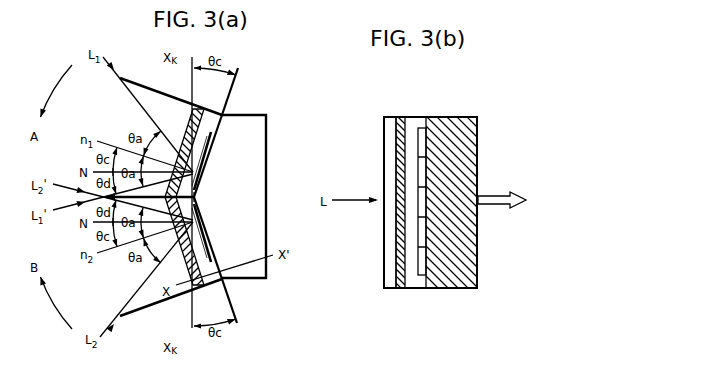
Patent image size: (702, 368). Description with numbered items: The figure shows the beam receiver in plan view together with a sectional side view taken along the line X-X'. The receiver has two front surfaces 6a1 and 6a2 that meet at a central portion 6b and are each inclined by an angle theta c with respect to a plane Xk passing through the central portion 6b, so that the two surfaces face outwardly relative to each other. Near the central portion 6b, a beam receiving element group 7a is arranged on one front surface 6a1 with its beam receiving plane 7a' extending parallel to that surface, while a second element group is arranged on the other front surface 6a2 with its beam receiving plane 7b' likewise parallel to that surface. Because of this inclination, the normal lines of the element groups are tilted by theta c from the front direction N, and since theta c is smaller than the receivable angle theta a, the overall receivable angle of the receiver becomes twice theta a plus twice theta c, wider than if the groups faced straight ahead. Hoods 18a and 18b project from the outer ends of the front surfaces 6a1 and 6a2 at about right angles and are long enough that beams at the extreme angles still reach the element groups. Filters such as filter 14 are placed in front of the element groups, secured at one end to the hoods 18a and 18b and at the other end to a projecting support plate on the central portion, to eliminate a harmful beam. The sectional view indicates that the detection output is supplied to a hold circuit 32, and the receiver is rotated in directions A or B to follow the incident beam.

The front surface 6a1 is at (215, 135).
The front surface 6a2 is at (214, 262).
The central portion 6b is at (203, 204).
The beam receiving element group 7a is at (214, 161).
The beam receiving plane 7a' is at (215, 161).
The beam receiving plane 7b' is at (215, 233).
The filter 14 is at (184, 153).
The hood 18a is at (138, 83).
The hood 18b is at (148, 306).
The hold circuit 32 is at (535, 202).